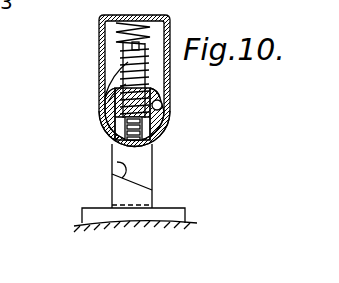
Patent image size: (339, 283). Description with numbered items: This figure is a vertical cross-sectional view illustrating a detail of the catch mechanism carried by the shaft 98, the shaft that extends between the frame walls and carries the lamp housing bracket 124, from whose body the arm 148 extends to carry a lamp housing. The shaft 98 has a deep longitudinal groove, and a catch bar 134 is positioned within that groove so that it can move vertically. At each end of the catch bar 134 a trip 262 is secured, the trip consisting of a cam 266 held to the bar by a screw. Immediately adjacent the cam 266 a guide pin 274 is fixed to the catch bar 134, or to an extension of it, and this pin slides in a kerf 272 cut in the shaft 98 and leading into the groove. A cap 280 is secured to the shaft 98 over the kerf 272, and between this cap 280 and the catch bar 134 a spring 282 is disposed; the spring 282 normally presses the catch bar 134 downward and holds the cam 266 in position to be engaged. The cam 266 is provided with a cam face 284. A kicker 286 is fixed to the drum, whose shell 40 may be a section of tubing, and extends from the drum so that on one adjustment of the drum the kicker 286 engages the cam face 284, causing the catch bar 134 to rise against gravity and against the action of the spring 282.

The shell 40 is at (95, 220).
The shaft 98 is at (172, 127).
The lamp housing bracket 124 is at (35, 0).
The catch bar 134 is at (117, 128).
The arm 148 is at (64, 0).
The trip 262 is at (137, 73).
The cam 266 is at (140, 173).
The kerf 272 is at (172, 112).
The guide pin 274 is at (146, 68).
The cap 280 is at (170, 16).
The spring 282 is at (110, 90).
The cam face 284 is at (117, 162).
The kicker 286 is at (120, 191).